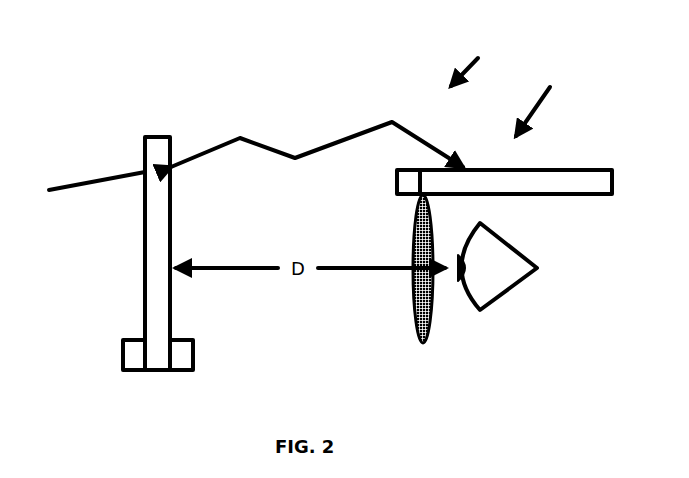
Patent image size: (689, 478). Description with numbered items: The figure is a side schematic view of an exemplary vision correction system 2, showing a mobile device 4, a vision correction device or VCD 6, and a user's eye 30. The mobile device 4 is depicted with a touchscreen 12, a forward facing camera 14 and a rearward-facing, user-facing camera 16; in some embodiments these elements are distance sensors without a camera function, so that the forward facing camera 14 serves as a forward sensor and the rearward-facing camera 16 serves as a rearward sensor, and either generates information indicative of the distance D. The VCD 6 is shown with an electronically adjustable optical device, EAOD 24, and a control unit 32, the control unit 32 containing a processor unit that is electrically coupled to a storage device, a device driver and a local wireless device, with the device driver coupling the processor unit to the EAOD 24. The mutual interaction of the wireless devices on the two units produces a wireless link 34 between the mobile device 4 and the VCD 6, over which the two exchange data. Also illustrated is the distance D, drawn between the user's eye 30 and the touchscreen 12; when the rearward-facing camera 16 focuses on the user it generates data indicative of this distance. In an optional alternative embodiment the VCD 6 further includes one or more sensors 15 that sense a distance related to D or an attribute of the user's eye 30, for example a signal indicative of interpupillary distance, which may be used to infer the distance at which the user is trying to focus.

The vision correction system 2 is at (475, 62).
The mobile device 4 is at (86, 187).
The VCD 6 is at (542, 101).
The touchscreen 12 is at (170, 210).
The forward facing camera 14 is at (123, 357).
The sensor 15 is at (397, 183).
The rearward-facing camera 16 is at (193, 358).
The EAOD 24 is at (423, 342).
The user's eye 30 is at (508, 287).
The control unit 32 is at (543, 170).
The wireless link 34 is at (348, 140).